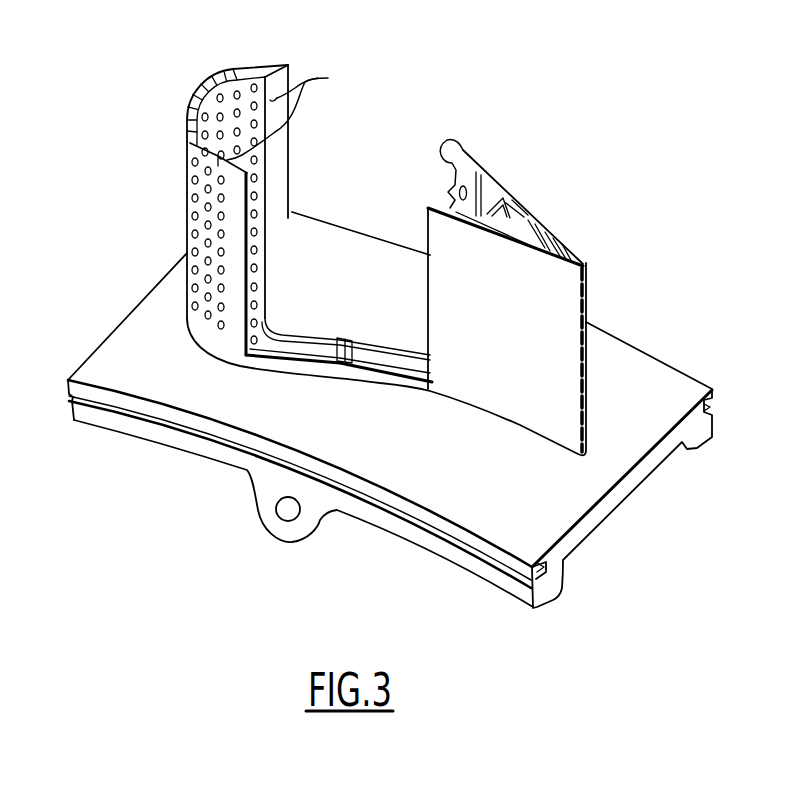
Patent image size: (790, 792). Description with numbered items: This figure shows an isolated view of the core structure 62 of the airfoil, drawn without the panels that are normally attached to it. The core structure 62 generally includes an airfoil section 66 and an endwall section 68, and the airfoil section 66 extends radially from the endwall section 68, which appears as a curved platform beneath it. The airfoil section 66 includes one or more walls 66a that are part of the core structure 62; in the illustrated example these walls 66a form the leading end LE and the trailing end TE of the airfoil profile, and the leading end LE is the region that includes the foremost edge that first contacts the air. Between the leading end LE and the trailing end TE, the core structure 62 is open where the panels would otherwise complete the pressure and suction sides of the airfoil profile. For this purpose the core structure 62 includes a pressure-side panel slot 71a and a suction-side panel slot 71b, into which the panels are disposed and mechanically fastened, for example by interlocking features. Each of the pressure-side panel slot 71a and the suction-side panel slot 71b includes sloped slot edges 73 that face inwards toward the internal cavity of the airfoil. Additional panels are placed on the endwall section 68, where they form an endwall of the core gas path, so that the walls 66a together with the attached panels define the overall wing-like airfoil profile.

The core structure 62 is at (117, 478).
The airfoil section 66 is at (188, 204).
The wall 66a is at (527, 217).
The endwall section 68 is at (576, 520).
The pressure-side panel slot 71a is at (258, 315).
The suction-side panel slot 71b is at (289, 161).
The sloped slot edges 73 is at (318, 78).
The leading end LE is at (185, 122).
The trailing end TE is at (592, 296).